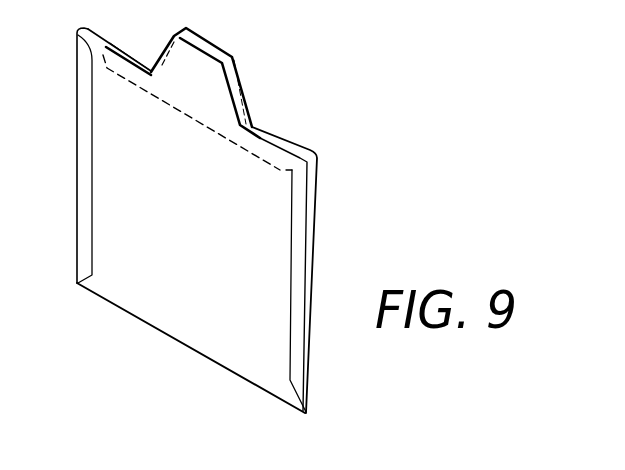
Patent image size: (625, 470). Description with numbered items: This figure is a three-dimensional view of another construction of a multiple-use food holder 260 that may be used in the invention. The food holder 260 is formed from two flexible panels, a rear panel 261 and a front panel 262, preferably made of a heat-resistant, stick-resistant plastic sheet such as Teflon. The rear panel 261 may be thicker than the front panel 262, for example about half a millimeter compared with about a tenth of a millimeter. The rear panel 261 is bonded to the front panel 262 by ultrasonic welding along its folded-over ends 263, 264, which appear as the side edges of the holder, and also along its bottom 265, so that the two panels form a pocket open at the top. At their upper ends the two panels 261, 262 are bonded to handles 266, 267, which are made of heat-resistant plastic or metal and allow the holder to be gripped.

The multiple-use food holder 260 is at (243, 221).
The rear panel 261 is at (313, 158).
The front panel 262 is at (260, 388).
The folded-over end 263 is at (95, 207).
The folded-over end 264 is at (290, 268).
The bottom 265 is at (163, 326).
The handle 266 is at (235, 55).
The handle 267 is at (323, 117).